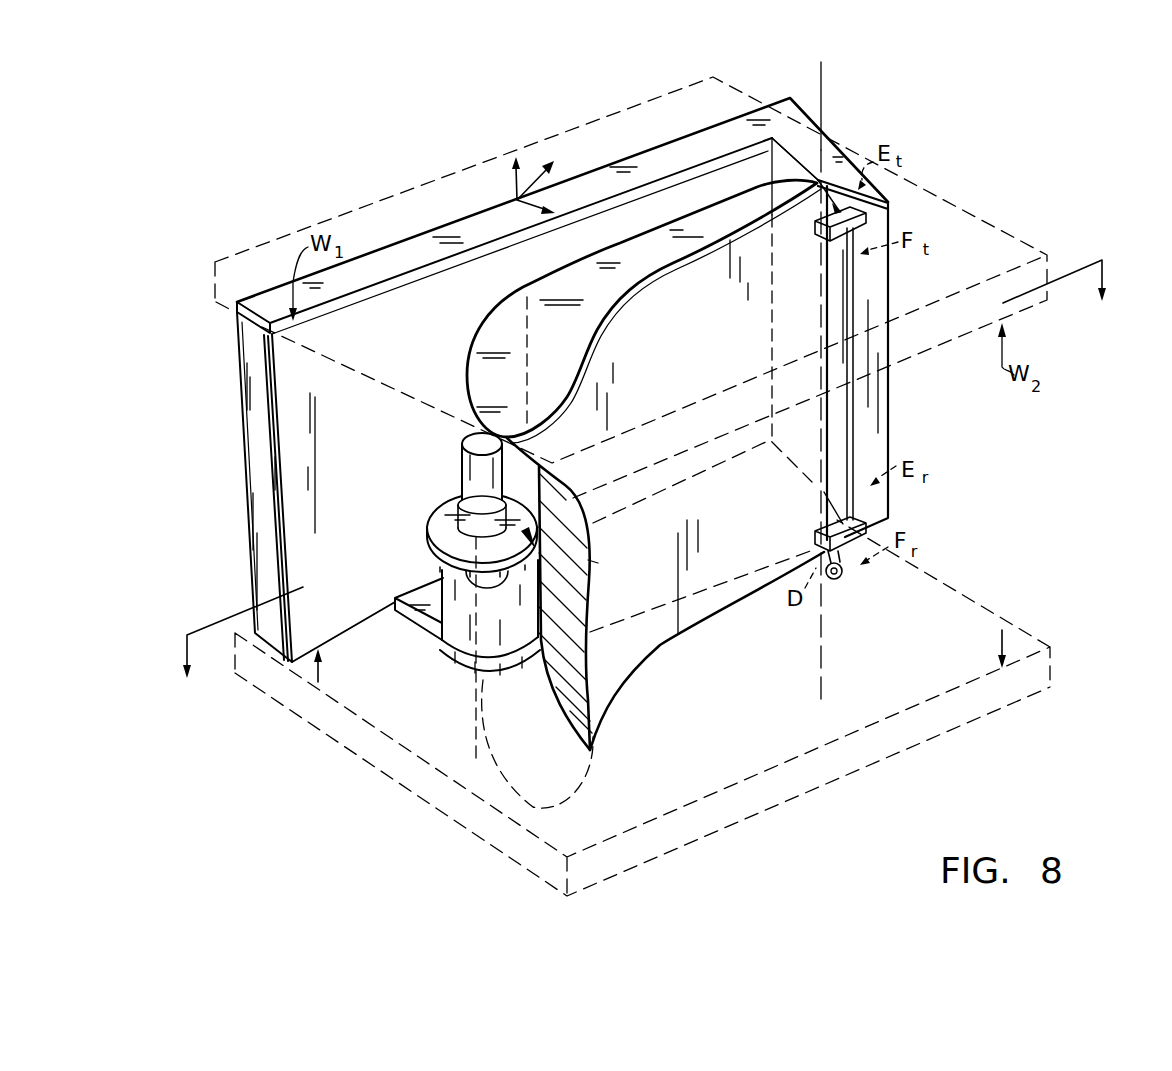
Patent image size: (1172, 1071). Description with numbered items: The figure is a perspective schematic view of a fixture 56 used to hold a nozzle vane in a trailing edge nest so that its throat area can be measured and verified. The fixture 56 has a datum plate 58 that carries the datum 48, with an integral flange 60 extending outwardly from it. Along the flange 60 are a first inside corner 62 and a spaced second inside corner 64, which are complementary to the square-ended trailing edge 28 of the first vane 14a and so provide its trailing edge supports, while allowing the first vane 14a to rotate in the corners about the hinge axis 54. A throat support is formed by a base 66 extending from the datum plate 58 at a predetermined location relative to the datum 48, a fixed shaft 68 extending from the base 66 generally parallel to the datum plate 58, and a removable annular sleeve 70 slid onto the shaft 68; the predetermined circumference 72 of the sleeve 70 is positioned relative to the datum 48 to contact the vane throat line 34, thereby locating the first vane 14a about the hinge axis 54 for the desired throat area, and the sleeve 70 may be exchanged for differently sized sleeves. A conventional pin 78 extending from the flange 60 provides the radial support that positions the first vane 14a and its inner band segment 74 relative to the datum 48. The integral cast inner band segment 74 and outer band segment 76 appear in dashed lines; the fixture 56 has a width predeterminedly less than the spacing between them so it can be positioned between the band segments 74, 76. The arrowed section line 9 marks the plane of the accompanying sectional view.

The section line 9- 9 is at (642, 469).
The first vane 14a is at (580, 266).
The square-ended trailing edge 28 is at (813, 184).
The vane throat line 34 is at (528, 357).
The datum 48 is at (515, 200).
The hinge axis 54 is at (824, 78).
The fixture 56 is at (780, 96).
The datum plate 58 is at (253, 443).
The flange 60 is at (890, 407).
The first inside corner 62 is at (890, 204).
The second inside corner 64 is at (890, 512).
The base 66 is at (415, 620).
The fixed shaft 68 is at (463, 473).
The annular sleeve 70 is at (440, 520).
The circumference 72 is at (446, 561).
The inner band segment 74 is at (937, 580).
The outer band segment 76 is at (960, 207).
The pin 78 is at (845, 578).